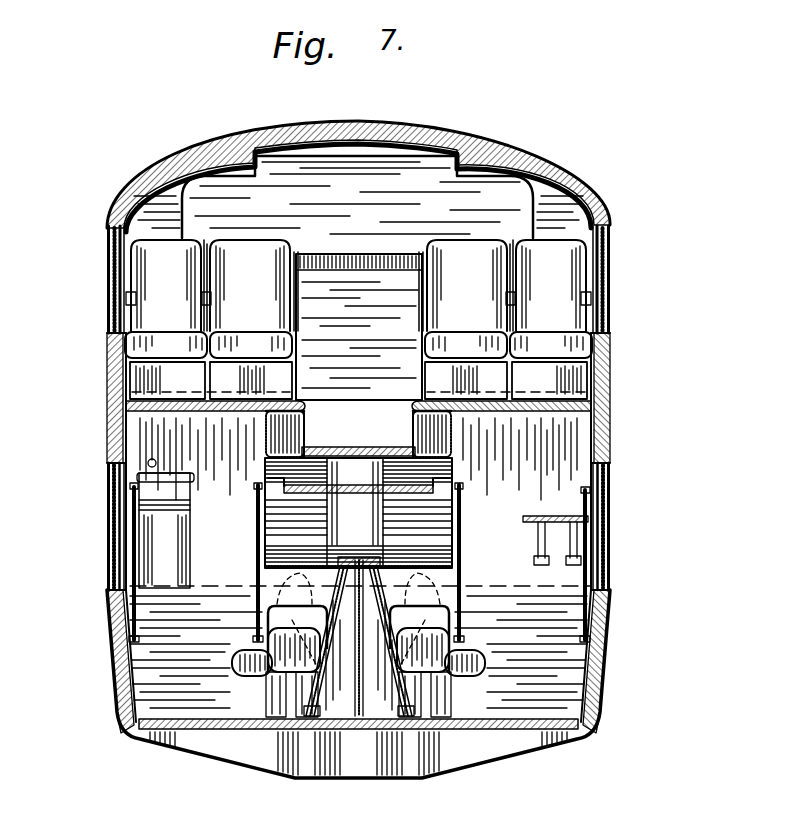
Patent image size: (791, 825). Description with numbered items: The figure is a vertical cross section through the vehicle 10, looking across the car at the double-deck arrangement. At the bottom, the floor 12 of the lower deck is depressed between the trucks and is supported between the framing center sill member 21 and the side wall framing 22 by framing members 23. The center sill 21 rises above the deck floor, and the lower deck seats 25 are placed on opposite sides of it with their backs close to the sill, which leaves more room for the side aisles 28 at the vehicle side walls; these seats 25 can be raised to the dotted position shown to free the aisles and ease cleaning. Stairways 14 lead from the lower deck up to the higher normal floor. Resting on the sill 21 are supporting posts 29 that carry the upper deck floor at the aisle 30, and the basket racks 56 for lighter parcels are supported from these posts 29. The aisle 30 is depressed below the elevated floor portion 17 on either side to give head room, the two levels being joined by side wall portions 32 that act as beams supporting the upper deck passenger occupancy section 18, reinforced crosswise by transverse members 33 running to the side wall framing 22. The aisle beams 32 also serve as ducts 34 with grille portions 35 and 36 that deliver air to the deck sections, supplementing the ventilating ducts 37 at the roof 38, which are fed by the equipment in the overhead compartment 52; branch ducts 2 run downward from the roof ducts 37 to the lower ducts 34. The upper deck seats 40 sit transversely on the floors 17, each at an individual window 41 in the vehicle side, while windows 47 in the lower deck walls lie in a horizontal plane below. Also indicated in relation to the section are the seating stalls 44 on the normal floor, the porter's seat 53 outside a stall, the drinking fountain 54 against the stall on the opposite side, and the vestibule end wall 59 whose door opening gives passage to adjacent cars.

The vehicle 10 is at (168, 162).
The roof 38 is at (348, 126).
The ventilating ducts 37 is at (237, 158).
The overhead compartment 52 is at (357, 197).
The branch ducts 2 is at (145, 215).
The windows 41 is at (107, 263).
The side wall framing 22 is at (107, 400).
The windows 47 is at (113, 522).
The upper deck seats 40 is at (358, 299).
The vestibule end wall 59 is at (418, 320).
The upper deck passenger occupancy section 18 is at (140, 372).
The transverse members 33 is at (107, 378).
The elevated floor portion 17 is at (280, 397).
The side wall portions 32 is at (303, 413).
The ducts 34 is at (270, 446).
The grille portions 36 is at (305, 428).
The grille portions 35 is at (453, 424).
The upper deck floor aisle 30 is at (348, 448).
The supporting posts 29 is at (358, 513).
The basket racks 56 is at (270, 478).
The porter's seat 53 is at (528, 518).
The stalls 44 is at (560, 464).
The drinking fountain 54 is at (162, 557).
The stairways 14 is at (145, 680).
The lower deck seats 25 is at (290, 730).
The framing center sill member 21 is at (376, 722).
The floor 12 is at (497, 728).
The framing members 23 is at (310, 768).
The aisles 28 is at (172, 716).